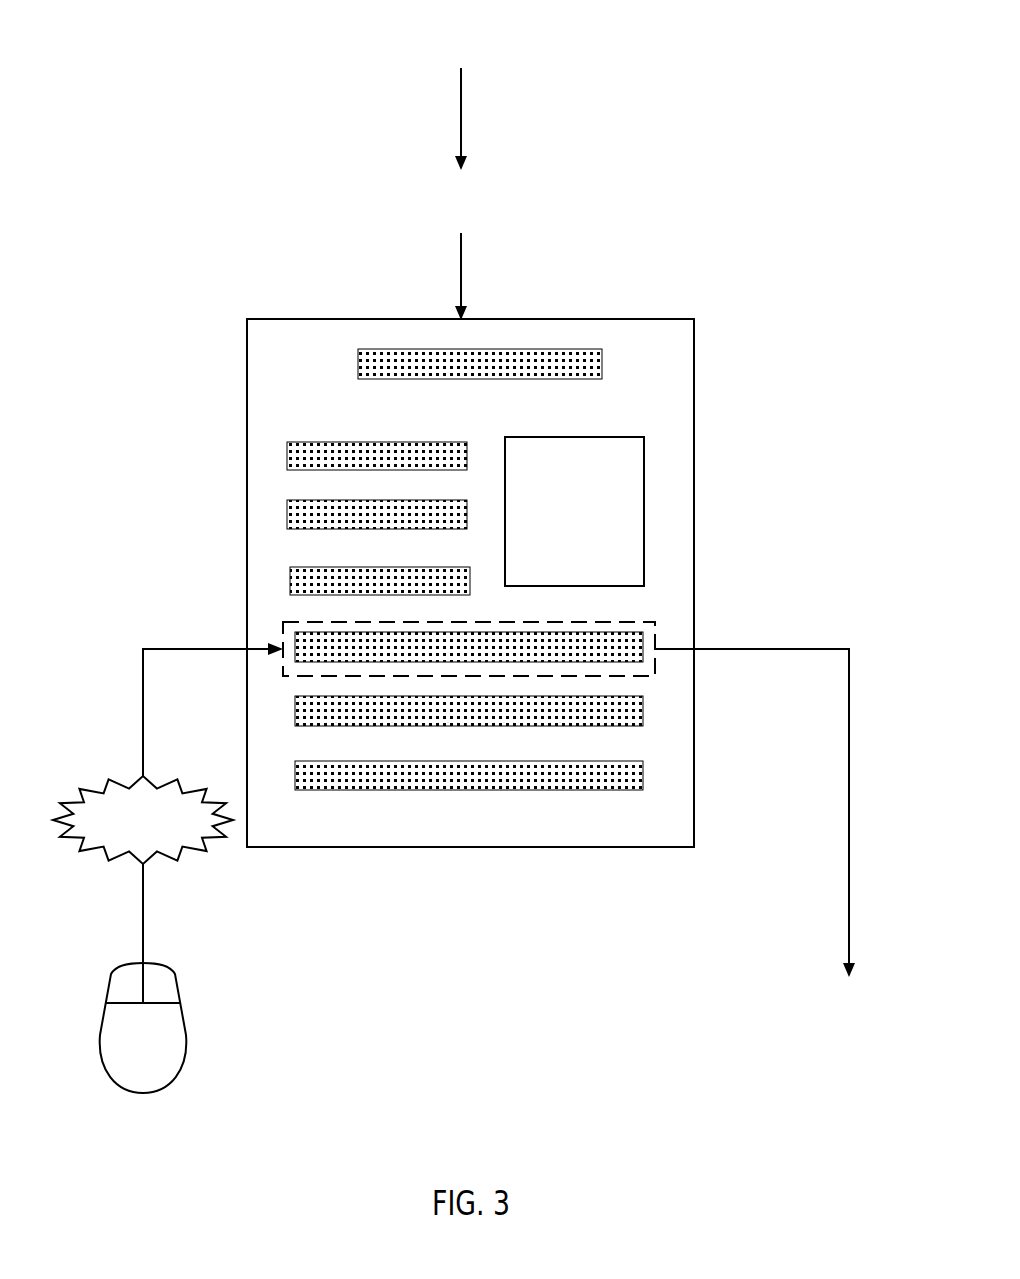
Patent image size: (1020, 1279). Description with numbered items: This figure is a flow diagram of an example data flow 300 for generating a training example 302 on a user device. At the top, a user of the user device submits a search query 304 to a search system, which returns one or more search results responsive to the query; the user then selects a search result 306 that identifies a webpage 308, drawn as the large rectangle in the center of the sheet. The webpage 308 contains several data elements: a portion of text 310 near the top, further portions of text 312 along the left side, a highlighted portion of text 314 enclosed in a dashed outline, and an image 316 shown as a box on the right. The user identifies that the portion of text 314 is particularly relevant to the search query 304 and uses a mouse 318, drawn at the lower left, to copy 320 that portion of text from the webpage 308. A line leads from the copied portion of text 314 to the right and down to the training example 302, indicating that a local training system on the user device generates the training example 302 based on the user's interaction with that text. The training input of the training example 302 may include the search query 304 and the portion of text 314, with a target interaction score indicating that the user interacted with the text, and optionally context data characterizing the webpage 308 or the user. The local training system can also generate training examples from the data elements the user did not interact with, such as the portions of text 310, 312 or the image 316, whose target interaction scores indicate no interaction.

The data flow 300 is at (113, 75).
The training example 302 is at (918, 1037).
The search query 304 is at (516, 55).
The search result 306 is at (520, 225).
The webpage 308 is at (247, 368).
The portion of text 310 is at (358, 366).
The portion of text 312 is at (378, 442).
The portion of text 314 is at (295, 643).
The image 316 is at (572, 437).
The mouse 318 is at (99, 1034).
The copy 320 is at (189, 830).